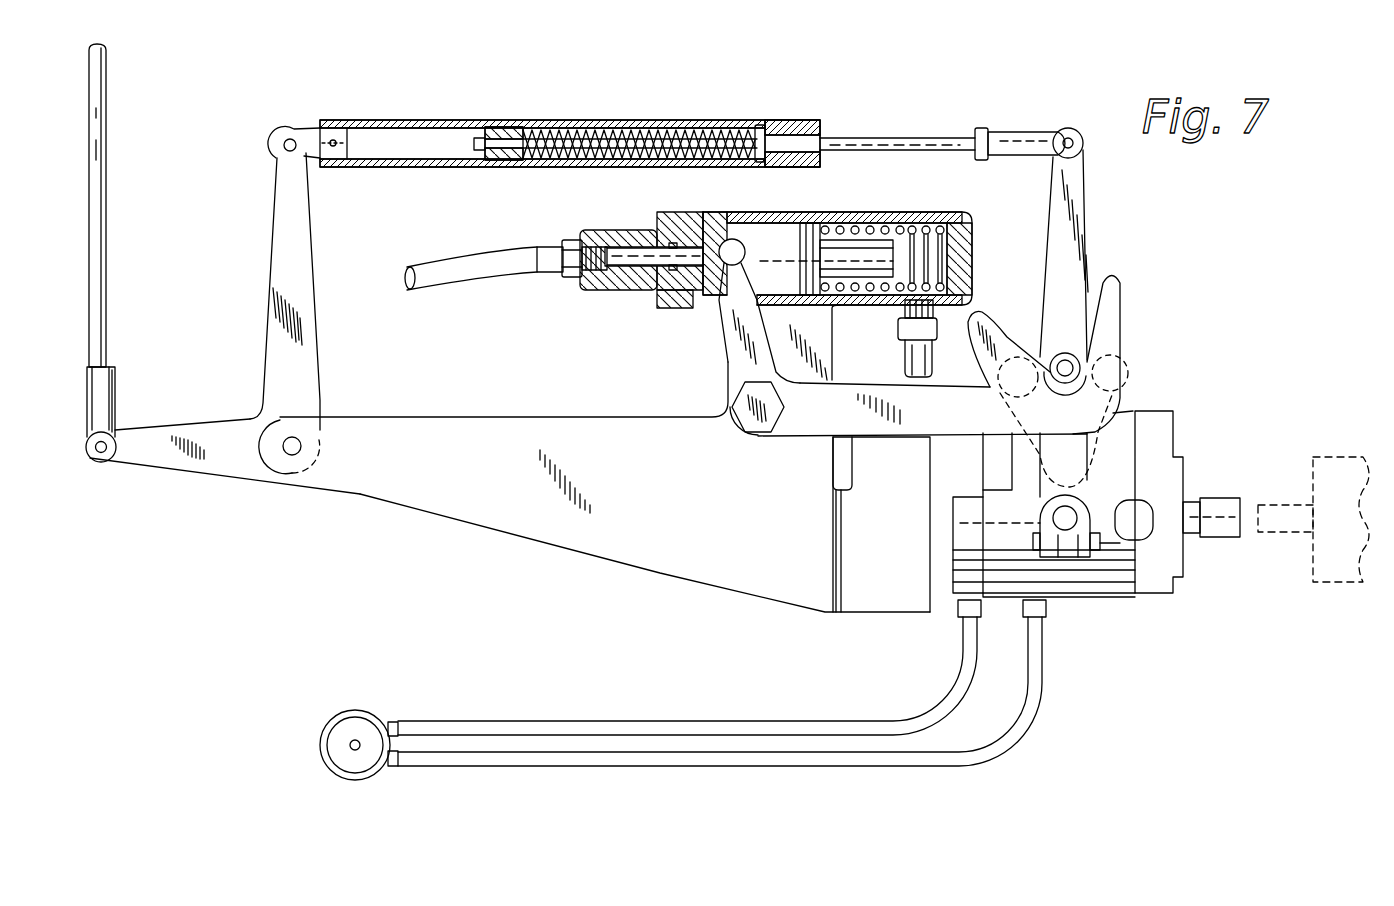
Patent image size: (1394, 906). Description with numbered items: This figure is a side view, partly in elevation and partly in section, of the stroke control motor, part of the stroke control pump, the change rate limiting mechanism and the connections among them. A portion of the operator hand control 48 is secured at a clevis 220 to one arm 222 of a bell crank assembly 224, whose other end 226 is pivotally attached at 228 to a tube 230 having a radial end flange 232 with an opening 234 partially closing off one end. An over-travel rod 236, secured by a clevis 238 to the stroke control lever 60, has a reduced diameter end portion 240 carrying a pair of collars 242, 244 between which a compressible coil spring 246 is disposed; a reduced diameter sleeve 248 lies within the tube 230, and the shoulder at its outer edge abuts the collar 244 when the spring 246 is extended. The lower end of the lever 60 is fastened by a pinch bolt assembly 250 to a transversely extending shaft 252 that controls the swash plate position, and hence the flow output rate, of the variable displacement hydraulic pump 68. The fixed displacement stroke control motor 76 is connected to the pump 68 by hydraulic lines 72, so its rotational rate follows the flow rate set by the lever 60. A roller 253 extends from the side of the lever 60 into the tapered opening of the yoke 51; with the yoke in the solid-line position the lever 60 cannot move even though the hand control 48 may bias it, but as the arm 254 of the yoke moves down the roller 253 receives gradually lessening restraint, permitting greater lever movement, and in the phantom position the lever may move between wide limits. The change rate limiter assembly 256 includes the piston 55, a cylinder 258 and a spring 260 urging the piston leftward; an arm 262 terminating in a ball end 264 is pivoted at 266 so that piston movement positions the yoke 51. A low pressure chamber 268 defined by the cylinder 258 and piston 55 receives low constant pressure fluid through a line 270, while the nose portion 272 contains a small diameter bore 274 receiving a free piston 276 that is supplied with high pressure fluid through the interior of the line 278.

The operator hand control 48 is at (107, 160).
The yoke 51 is at (1121, 313).
The piston 55 is at (782, 240).
The stroke control lever 60 is at (1080, 197).
The variable displacement hydraulic pump 68 is at (1153, 413).
The hydraulic lines 72 is at (1032, 648).
The stroke control motor 76 is at (363, 708).
The clevis 220 is at (90, 455).
The arm 222 is at (173, 465).
The bell crank assembly 224 is at (398, 372).
The other end of bell crank assembly 226 is at (312, 228).
The pivotal attachment 228 is at (290, 130).
The tube 230 is at (413, 93).
The radial end flange 232 is at (783, 121).
The opening 234 is at (796, 141).
The over-travel rod 236 is at (905, 133).
The clevis 238 is at (1007, 130).
The reduced diameter end portion 240 is at (620, 117).
The collar 242 is at (758, 128).
The collar 244 is at (513, 127).
The compressible coil spring 246 is at (643, 137).
The reduced diameter sleeve 248 is at (413, 145).
The pinch bolt assembly 250 is at (1080, 550).
The transversely extending shaft 252 is at (1062, 507).
The roller 253 is at (1070, 350).
The arm of the yoke 254 is at (948, 417).
The stroke control pump change rate limiter assembly 256 is at (635, 301).
The cylinder 258 is at (903, 222).
The spring 260 is at (950, 238).
The arm 262 is at (728, 355).
The ball end 264 is at (730, 247).
The pivot 266 is at (782, 403).
The low pressure chamber 268 is at (950, 259).
The line 270 is at (908, 367).
The nose portion 272 is at (617, 223).
The small diameter bore 274 is at (561, 262).
The free piston 276 is at (640, 248).
The line 278 is at (505, 228).